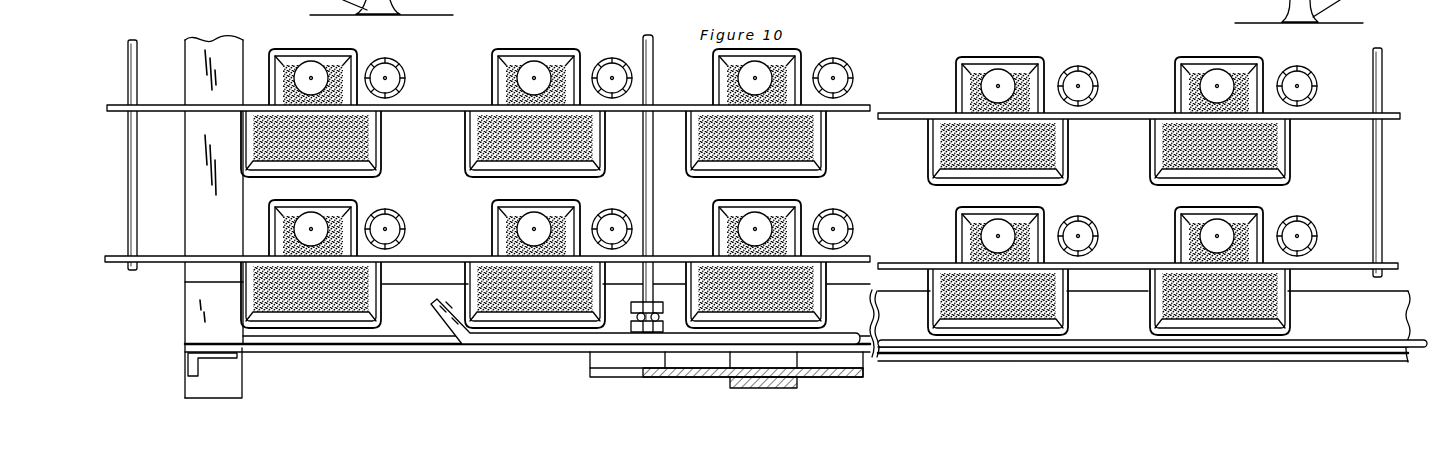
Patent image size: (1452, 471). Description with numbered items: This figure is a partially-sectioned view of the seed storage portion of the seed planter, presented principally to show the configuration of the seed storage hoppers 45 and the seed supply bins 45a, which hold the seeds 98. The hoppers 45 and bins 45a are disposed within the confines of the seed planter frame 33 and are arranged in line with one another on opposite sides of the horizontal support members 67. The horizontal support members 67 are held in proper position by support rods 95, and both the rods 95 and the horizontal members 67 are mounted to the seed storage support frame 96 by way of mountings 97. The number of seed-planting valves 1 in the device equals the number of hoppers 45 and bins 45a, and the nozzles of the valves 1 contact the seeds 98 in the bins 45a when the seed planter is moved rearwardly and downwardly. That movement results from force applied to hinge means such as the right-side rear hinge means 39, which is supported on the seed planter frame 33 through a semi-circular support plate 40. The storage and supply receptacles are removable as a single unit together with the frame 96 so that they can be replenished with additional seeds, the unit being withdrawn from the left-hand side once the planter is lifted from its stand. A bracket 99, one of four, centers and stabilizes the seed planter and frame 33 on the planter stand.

The seed-planting valve 1 is at (406, 90).
The seed planter frame 33 is at (203, 78).
The right-side rear hinge means 39 is at (793, 390).
The semi-circular support plate 40 is at (683, 378).
The seed storage hopper 45 is at (383, 133).
The seed supply bin 45a is at (337, 204).
The horizontal support member 67 is at (122, 105).
The support rod 95 is at (128, 68).
The seed storage support frame 96 is at (441, 317).
The mounting 97 is at (643, 305).
The seed 98 is at (509, 93).
The bracket 99 is at (217, 361).